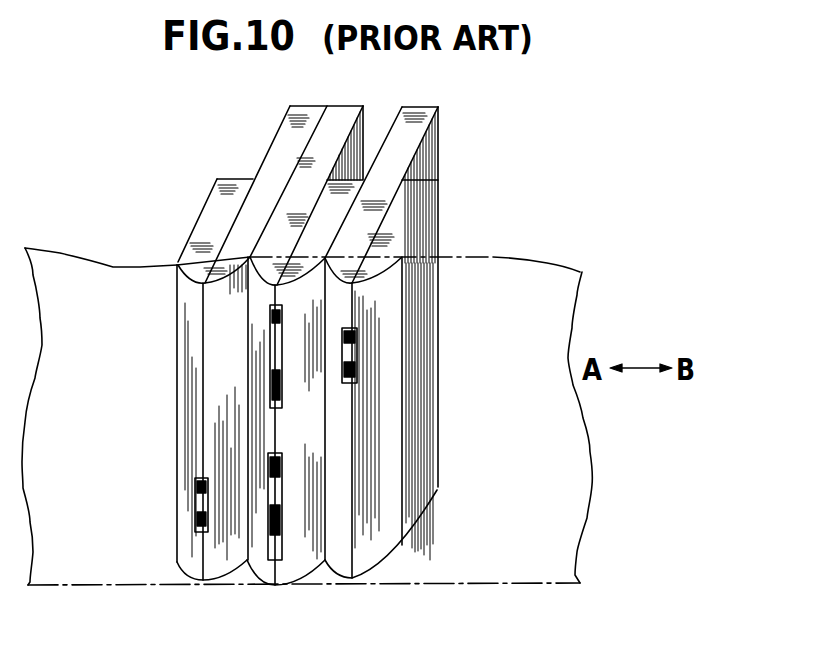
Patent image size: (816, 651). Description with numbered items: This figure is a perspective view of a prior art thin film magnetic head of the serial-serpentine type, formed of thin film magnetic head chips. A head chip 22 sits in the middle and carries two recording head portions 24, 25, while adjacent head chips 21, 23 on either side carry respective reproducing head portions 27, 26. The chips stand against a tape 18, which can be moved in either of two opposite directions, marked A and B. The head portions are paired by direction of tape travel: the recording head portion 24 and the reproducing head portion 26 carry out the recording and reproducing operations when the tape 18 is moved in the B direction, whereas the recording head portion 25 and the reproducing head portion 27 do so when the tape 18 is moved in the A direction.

The tape 18 is at (549, 285).
The head chip 21 is at (205, 588).
The head chip 22 is at (285, 588).
The head chip 23 is at (370, 588).
The recording head portion 24 is at (282, 370).
The recording head portion 25 is at (282, 492).
The reproducing head portion 26 is at (357, 340).
The reproducing head portion 27 is at (195, 522).